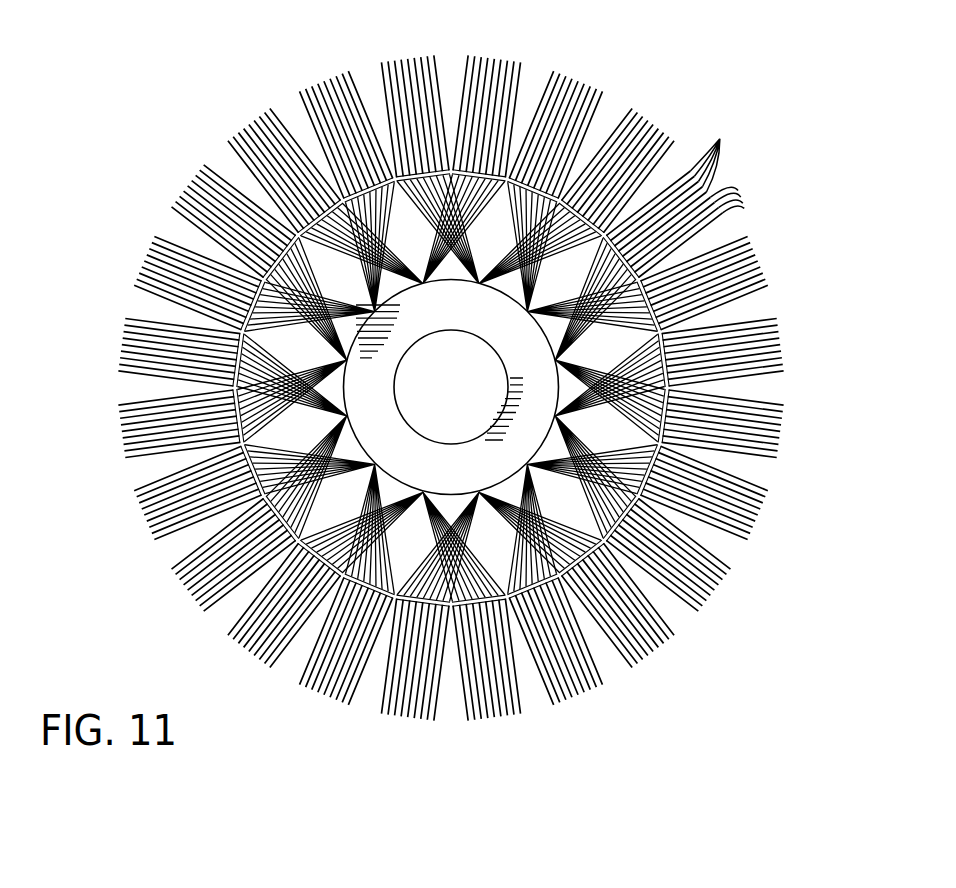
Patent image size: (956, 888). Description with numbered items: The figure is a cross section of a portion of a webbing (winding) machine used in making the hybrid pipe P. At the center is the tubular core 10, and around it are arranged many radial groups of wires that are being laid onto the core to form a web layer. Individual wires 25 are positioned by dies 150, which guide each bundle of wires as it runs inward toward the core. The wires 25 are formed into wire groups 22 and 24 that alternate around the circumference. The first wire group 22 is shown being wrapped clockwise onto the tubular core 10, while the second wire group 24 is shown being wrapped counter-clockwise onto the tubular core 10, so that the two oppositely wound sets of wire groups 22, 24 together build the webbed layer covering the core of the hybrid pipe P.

The tubular core 10 is at (467, 319).
The first wire group 22 is at (450, 397).
The second wire group 24 is at (782, 95).
The wires 25 is at (721, 139).
The dies 150 is at (451, 388).
The hybrid pipe P is at (80, 0).